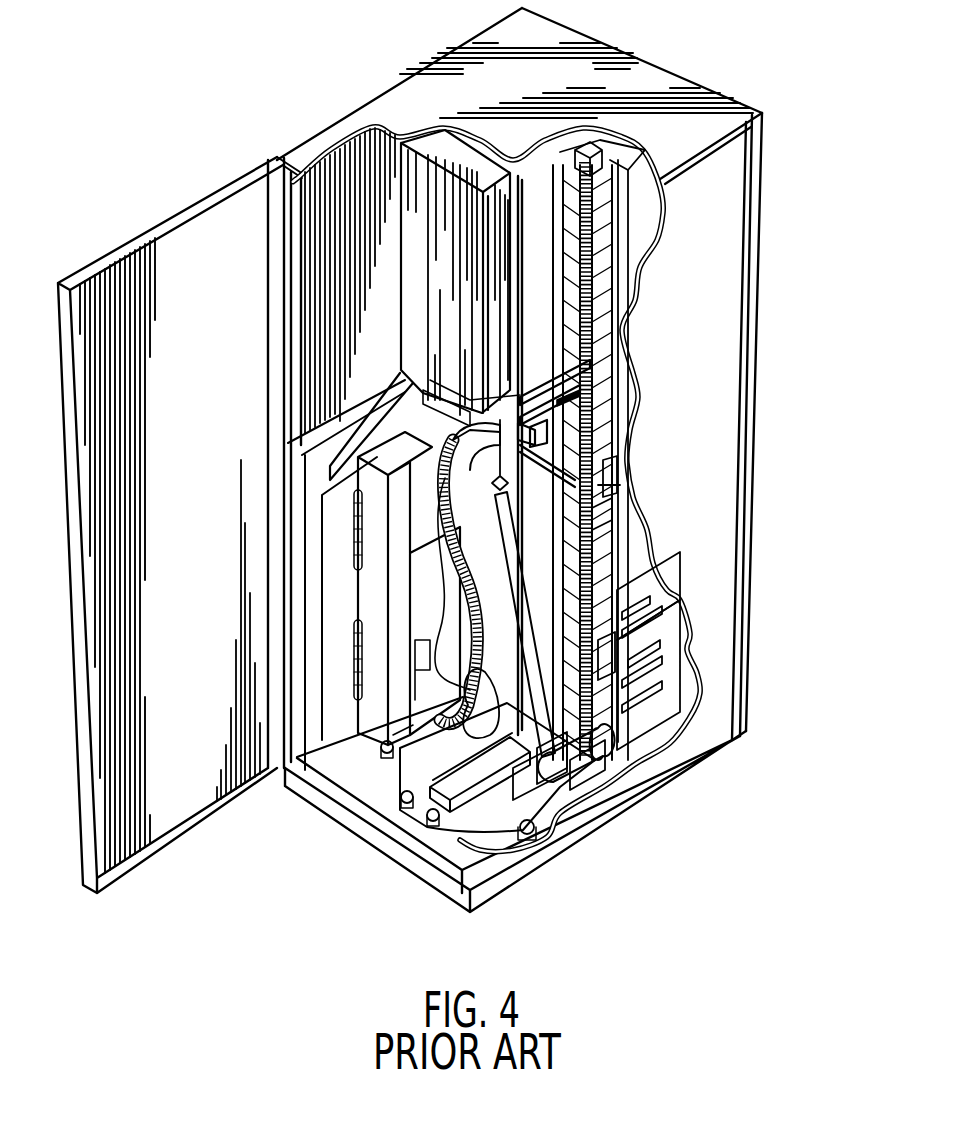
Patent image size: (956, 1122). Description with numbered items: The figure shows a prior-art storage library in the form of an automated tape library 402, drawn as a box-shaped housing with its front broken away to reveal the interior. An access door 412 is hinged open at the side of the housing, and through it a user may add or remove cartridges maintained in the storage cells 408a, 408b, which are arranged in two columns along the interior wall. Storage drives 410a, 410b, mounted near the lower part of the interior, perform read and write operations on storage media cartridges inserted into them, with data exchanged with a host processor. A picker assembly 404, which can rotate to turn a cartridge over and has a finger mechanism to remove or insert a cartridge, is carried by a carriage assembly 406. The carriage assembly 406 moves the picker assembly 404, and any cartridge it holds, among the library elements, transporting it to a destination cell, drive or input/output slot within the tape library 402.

The automated tape library 402 is at (228, 144).
The picker assembly 404 is at (598, 393).
The carriage assembly 406 is at (597, 293).
The storage cell 408a is at (597, 549).
The storage cell 408b is at (657, 631).
The storage drive 410a is at (597, 660).
The storage drive 410b is at (663, 690).
The access door 412 is at (140, 325).